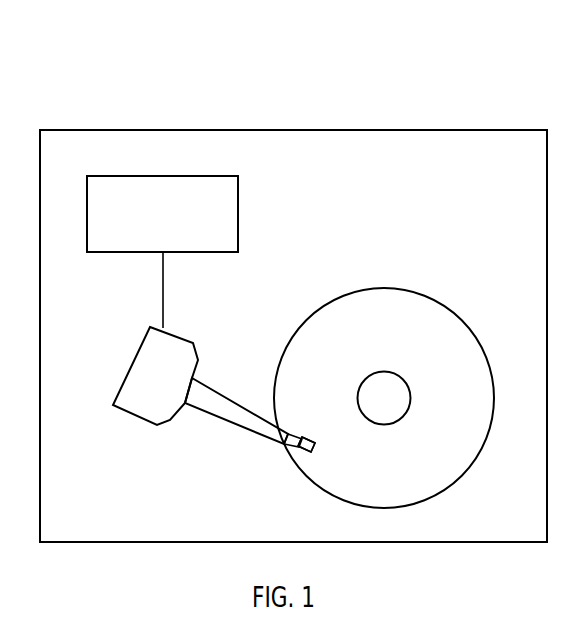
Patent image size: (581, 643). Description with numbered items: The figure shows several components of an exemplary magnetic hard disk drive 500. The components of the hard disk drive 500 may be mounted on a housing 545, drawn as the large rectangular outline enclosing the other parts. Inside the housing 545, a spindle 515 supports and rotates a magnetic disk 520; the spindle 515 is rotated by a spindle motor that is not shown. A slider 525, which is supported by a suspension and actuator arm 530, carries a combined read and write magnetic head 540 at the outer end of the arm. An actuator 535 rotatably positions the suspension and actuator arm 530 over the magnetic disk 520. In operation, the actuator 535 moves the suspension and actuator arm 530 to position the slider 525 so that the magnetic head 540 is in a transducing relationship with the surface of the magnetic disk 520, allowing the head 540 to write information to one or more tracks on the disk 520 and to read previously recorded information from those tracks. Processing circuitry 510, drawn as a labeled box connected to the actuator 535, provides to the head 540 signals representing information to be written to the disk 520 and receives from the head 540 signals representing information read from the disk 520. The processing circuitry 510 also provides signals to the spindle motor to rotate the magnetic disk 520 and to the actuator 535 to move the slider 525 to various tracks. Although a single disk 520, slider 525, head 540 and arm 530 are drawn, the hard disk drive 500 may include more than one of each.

The hard disk drive 500 is at (94, 58).
The housing 545 is at (378, 130).
The processing circuitry 510 is at (239, 218).
The actuator 535 is at (171, 388).
The suspension and actuator arm 530 is at (213, 385).
The slider 525 is at (314, 440).
The combined read and write magnetic head 540 is at (316, 450).
The magnetic disk 520 is at (398, 341).
The spindle 515 is at (398, 408).